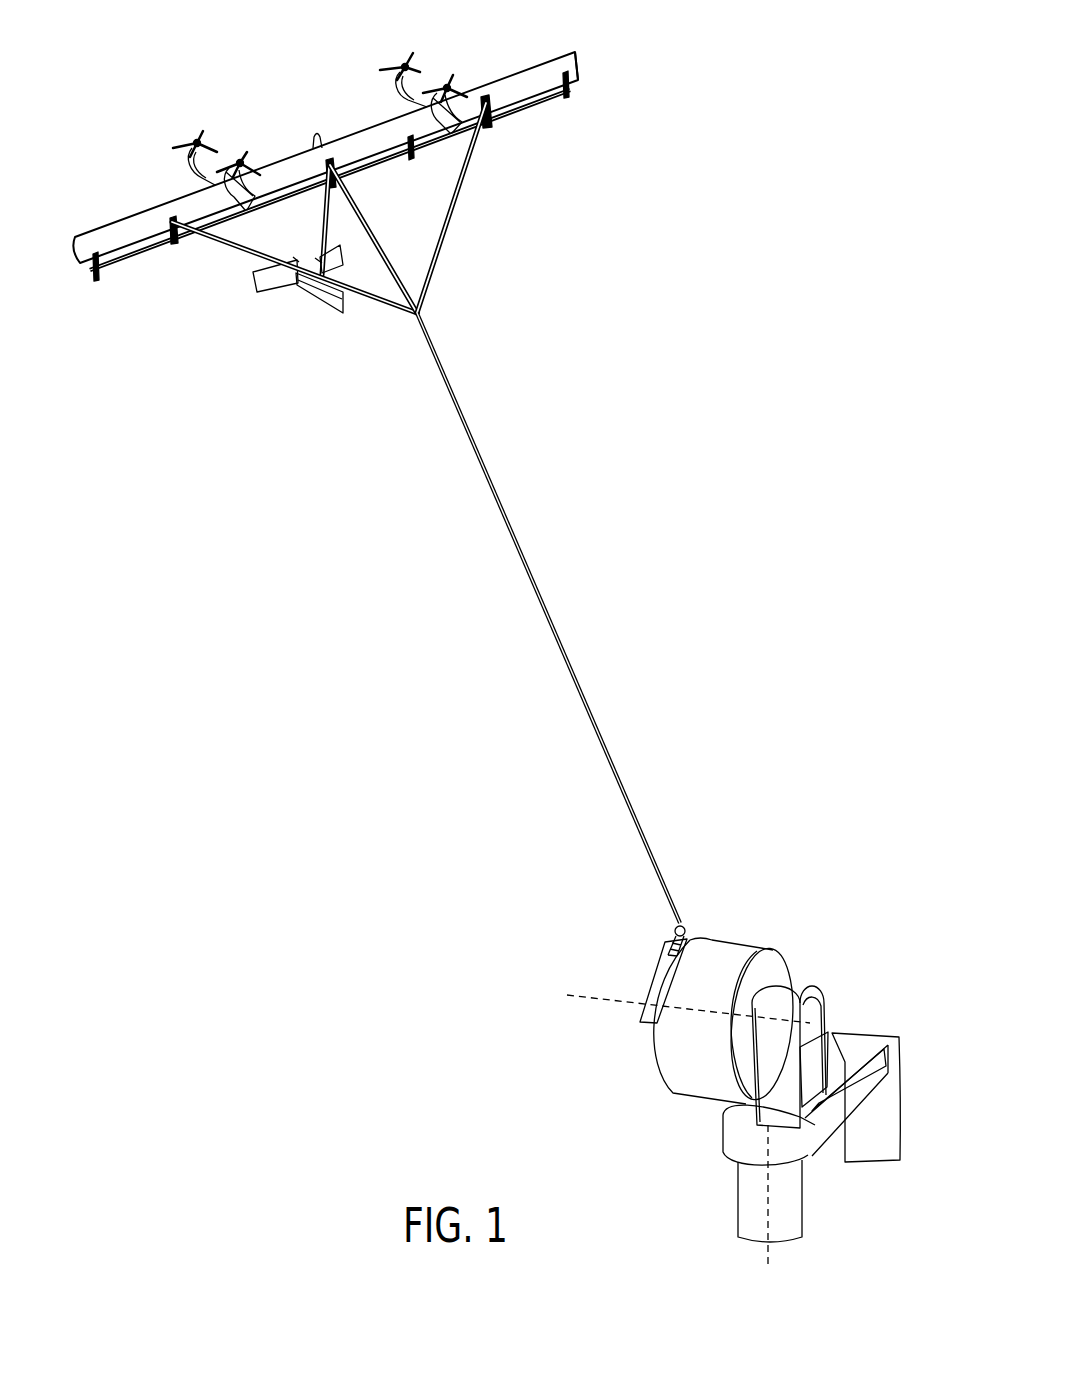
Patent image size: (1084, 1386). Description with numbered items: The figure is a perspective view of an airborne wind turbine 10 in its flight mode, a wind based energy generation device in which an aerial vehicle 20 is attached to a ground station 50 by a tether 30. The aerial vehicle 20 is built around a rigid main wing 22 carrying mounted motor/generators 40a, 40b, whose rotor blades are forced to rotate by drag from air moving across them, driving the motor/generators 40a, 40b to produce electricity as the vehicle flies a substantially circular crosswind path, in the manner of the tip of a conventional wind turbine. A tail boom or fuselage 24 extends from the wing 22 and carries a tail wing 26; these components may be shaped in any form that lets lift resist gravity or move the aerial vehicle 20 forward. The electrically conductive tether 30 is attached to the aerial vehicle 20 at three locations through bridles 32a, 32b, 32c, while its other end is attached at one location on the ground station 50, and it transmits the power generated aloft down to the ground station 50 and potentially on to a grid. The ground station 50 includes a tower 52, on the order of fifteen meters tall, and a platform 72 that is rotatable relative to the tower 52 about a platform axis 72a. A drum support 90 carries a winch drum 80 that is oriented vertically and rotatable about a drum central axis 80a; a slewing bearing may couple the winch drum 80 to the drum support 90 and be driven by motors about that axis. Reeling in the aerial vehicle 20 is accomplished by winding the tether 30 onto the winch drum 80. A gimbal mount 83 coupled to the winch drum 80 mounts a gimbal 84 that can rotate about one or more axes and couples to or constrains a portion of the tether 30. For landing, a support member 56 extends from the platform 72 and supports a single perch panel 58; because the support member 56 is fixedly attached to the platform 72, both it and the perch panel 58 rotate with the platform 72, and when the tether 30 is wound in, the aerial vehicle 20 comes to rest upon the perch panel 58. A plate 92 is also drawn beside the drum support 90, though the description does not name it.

The airborne wind turbine 10 is at (710, 248).
The aerial vehicle 20 is at (292, 140).
The main wing 22 is at (132, 223).
The tail boom 24 is at (322, 211).
The tail wing 26 is at (320, 297).
The tether 30 is at (525, 562).
The bridle 32a is at (467, 175).
The bridle 32b is at (400, 277).
The bridle 32c is at (228, 244).
The motor/generator 40a is at (443, 78).
The motor/generator 40b is at (403, 55).
The ground station 50 is at (828, 902).
The tower 52 is at (788, 1207).
The support member 56 is at (853, 1088).
The perch panel 58 is at (860, 1042).
The platform 72 is at (735, 1140).
The platform rotation axis 72a is at (767, 1243).
The winch drum 80 is at (728, 960).
The drum central axis 80a is at (583, 993).
The gimbal mount 83 is at (657, 983).
The gimbal 84 is at (684, 920).
The drum support 90 is at (787, 1003).
The plate 92 is at (810, 1060).